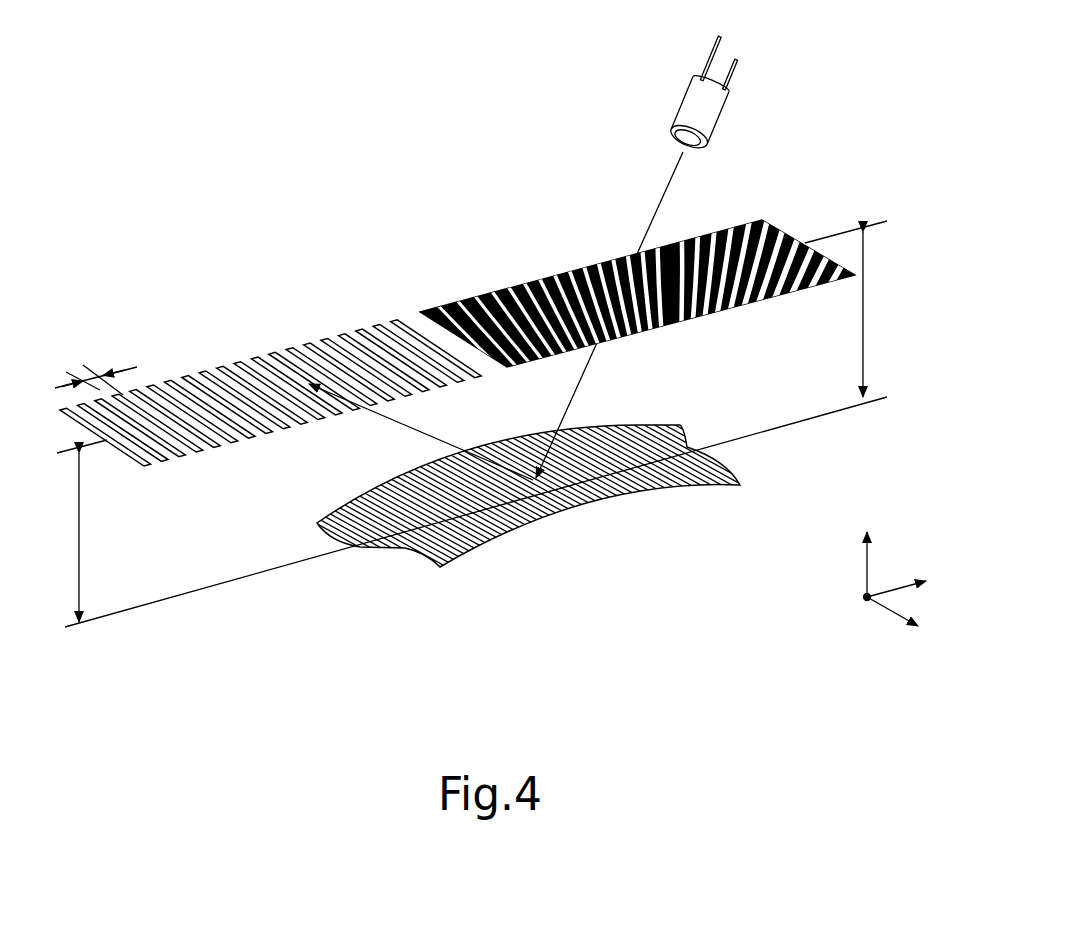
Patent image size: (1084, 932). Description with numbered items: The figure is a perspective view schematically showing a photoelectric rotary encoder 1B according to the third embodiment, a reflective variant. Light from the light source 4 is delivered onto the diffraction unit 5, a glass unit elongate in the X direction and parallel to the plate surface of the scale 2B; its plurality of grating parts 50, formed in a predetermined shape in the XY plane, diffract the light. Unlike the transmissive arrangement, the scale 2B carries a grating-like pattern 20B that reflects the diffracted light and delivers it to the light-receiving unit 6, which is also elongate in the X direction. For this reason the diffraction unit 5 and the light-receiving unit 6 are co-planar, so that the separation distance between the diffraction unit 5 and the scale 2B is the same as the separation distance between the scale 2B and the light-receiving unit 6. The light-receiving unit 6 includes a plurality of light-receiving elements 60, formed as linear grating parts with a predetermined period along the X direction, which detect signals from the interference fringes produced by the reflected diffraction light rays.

The photoelectric rotary encoder 1B is at (885, 117).
The light source 4 is at (683, 100).
The diffraction unit 5 is at (638, 299).
The grating parts 50 is at (683, 320).
The light-receiving unit 6 is at (270, 384).
The light-receiving elements 60 is at (160, 463).
The scale 2B is at (461, 495).
The grating-like pattern 20B is at (673, 490).